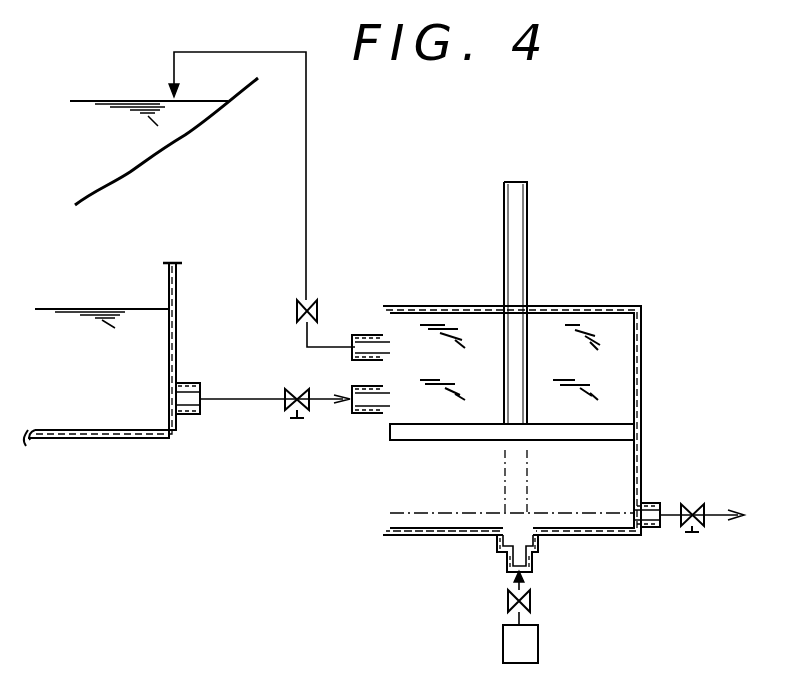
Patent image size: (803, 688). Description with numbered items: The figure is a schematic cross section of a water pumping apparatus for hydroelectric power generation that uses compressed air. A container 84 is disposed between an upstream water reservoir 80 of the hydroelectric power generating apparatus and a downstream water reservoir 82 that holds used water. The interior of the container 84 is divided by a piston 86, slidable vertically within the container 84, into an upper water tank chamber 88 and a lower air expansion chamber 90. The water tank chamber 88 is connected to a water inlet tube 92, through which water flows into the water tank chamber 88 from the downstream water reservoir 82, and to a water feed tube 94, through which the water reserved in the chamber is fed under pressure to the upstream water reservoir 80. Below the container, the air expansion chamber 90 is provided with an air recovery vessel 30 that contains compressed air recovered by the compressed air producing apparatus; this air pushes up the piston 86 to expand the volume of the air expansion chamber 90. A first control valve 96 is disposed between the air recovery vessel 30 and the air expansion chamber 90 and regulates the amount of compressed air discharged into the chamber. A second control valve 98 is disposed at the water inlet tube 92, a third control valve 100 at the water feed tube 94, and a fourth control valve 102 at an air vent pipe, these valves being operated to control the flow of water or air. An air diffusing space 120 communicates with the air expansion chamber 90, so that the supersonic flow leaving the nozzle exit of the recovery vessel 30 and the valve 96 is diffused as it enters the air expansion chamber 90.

The air recovery vessel 30 is at (540, 645).
The upstream water reservoir 80 is at (110, 101).
The downstream water reservoir 82 is at (88, 308).
The container 84 is at (622, 306).
The piston 86 is at (455, 440).
The water tank chamber 88 is at (620, 378).
The air expansion chamber 90 is at (620, 476).
The water inlet tube 92 is at (247, 398).
The water feed tube 94 is at (306, 135).
The first control valve 96 is at (533, 600).
The second control valve 98 is at (299, 422).
The third control valve 100 is at (296, 311).
The fourth control valve 102 is at (693, 535).
The air diffusing space 120 is at (500, 542).